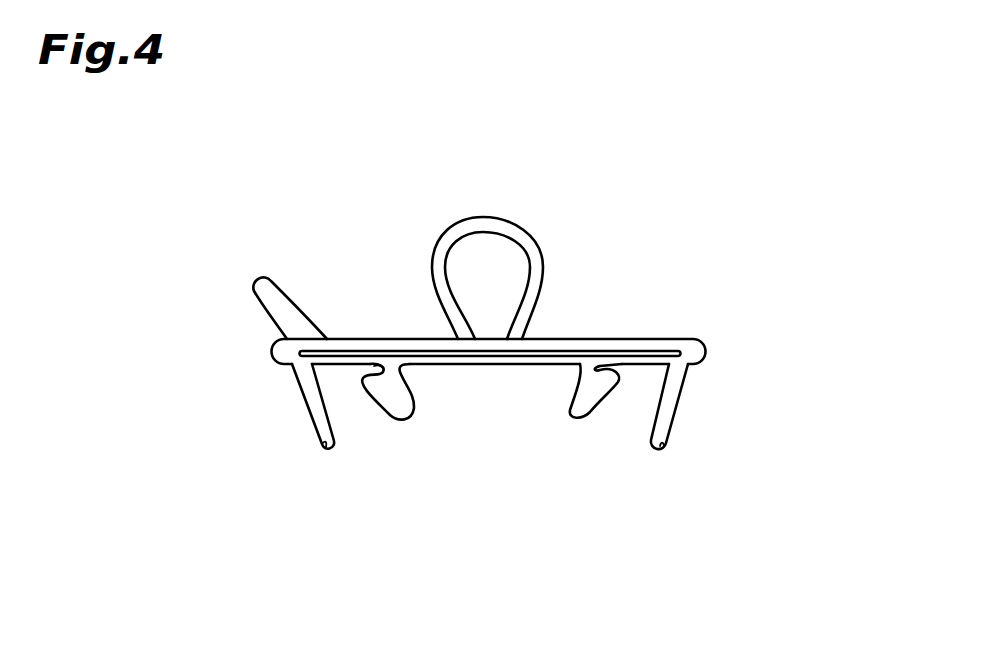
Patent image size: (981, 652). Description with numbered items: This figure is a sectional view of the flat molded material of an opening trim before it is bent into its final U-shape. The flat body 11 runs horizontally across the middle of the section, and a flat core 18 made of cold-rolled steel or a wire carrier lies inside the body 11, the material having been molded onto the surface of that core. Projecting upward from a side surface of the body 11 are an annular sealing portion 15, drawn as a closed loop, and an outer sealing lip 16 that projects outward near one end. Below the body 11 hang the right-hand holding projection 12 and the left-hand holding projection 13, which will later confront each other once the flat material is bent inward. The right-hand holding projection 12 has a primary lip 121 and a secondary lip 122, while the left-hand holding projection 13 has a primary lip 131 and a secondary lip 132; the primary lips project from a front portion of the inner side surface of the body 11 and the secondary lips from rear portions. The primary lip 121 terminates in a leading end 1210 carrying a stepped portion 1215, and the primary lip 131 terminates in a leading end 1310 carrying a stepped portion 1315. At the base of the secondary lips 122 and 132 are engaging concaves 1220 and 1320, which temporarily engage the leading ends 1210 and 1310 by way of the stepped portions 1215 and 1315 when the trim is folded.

The body 11 is at (555, 352).
The right-hand holding projection 12 is at (760, 457).
The left-hand holding projection 13 is at (255, 446).
The annular sealing portion 15 is at (492, 224).
The outer sealing lip 16 is at (257, 291).
The flat core 18 is at (530, 356).
The primary lip 121 is at (668, 410).
The secondary lip 122 is at (593, 404).
The primary lip 131 is at (303, 398).
The secondary lip 132 is at (390, 400).
The leading end 1210 is at (656, 452).
The stepped portion 1215 is at (663, 447).
The engaging concave 1220 is at (622, 370).
The leading end 1310 is at (323, 450).
The stepped portion 1315 is at (322, 446).
The engaging concave 1320 is at (375, 366).